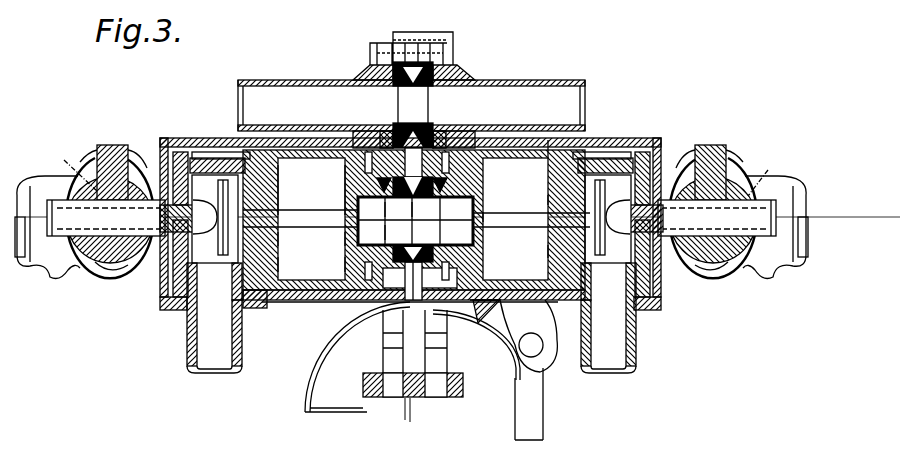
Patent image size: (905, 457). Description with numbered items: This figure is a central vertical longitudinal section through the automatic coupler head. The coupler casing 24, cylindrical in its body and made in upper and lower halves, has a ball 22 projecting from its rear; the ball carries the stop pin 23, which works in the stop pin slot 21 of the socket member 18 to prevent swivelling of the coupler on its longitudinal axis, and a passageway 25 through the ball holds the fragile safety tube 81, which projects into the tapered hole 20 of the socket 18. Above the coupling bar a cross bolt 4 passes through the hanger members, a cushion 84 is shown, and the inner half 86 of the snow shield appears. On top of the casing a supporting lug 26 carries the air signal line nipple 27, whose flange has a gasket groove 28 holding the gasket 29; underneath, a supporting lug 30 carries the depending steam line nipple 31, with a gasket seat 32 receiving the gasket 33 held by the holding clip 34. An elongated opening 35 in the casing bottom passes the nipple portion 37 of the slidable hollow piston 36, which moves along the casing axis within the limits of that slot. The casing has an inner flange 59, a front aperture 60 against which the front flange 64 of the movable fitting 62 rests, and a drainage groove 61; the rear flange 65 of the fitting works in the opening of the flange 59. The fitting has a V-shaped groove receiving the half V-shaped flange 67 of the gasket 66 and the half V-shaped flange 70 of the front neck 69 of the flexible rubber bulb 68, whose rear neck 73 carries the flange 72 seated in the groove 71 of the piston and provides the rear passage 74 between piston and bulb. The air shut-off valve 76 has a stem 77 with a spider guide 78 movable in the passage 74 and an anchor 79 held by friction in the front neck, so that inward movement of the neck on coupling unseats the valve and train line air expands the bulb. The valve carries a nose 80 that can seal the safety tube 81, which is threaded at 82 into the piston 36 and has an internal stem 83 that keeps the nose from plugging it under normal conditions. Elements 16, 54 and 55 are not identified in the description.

The cross bolt 4 is at (22, 257).
The spindle 16 is at (172, 240).
The socket member 18 is at (84, 272).
The tapered hole 20 is at (52, 270).
The stop pin slot 21 is at (82, 160).
The ball 22 is at (100, 278).
The stop pin 23 is at (118, 158).
The coupler casing 24 is at (225, 142).
The passageway 25 is at (172, 152).
The supporting lug 26 is at (358, 73).
The air signal line nipple 27 is at (285, 79).
The gasket groove 28 is at (397, 62).
The gasket 29 is at (412, 62).
The supporting lug 30 is at (384, 398).
The steam line nipple 31 is at (315, 396).
The gasket seat 32 is at (365, 308).
The gasket 33 is at (408, 400).
The holding clip 34 is at (383, 360).
The elongated opening 35 is at (250, 308).
The slidable hollow piston 36 is at (222, 201).
The nipple portion 37 is at (192, 350).
The arm 54 is at (535, 424).
The pivot hole 55 is at (543, 360).
The inner flange 59 is at (388, 124).
The front aperture 60 is at (431, 133).
The drainage groove 61 is at (415, 250).
The movable fitting 62 is at (353, 190).
The front flange 64 is at (355, 175).
The rear flange 65 is at (355, 267).
The gasket 66 is at (418, 232).
The half V-shaped flange 67 is at (398, 210).
The bulb 68 is at (555, 270).
The front neck 69 is at (415, 232).
The half V-shaped flange 70 is at (415, 210).
The groove 71 is at (236, 284).
The flange 72 is at (570, 116).
The rear neck 73 is at (557, 252).
The rear passage 74 is at (224, 242).
The air shut-off valve 76 is at (357, 237).
The stem 77 is at (505, 213).
The spider guide 78 is at (273, 207).
The anchor 79 is at (355, 208).
The nose 80 is at (230, 230).
The safety tube 81 is at (423, 168).
The threaded connection 82 is at (172, 262).
The internal stem 83 is at (118, 273).
The cushion 84 is at (156, 229).
The inner half of snow shield 86 is at (380, 52).